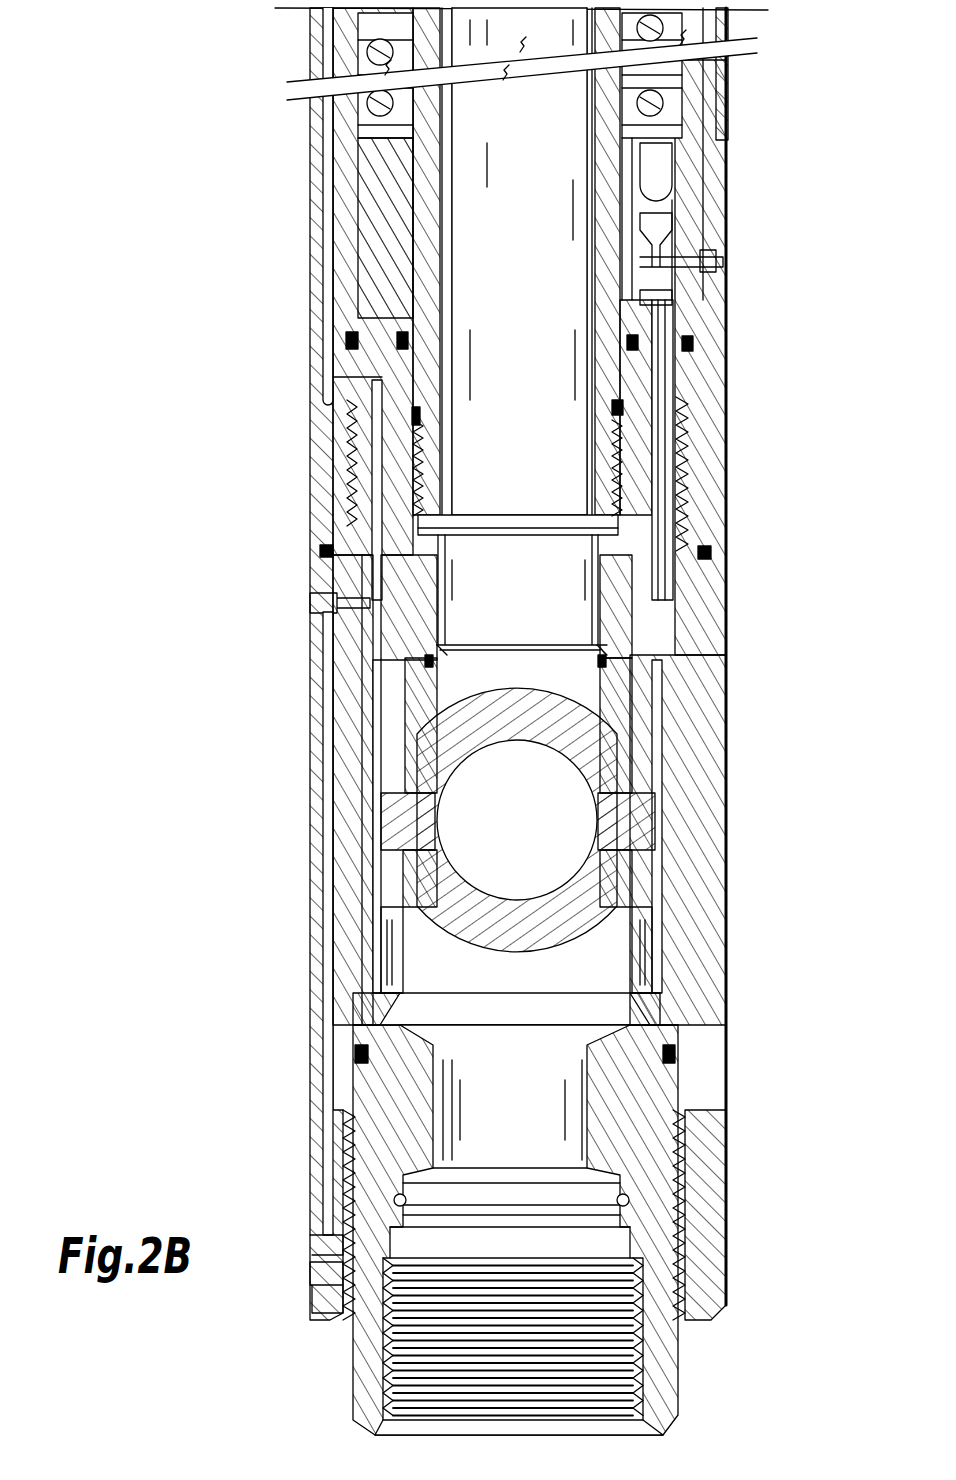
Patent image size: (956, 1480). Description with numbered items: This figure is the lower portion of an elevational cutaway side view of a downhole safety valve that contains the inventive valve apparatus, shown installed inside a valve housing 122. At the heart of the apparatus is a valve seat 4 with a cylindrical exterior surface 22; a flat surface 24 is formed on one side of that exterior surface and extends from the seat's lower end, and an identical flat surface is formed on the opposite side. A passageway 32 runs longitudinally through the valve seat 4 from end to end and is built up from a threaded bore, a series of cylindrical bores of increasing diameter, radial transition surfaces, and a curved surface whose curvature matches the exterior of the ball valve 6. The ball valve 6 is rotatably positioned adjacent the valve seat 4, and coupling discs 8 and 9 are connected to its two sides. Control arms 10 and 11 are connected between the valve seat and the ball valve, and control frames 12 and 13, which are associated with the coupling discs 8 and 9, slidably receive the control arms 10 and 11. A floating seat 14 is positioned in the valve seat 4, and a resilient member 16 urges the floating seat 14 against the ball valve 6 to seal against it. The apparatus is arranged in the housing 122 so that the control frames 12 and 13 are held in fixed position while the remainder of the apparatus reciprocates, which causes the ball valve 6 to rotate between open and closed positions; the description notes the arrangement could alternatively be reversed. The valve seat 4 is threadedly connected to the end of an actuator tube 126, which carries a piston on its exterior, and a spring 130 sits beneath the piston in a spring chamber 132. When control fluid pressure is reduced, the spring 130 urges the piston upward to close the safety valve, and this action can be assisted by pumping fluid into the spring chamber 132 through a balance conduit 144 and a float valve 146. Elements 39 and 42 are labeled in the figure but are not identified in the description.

The valve seat 4 is at (612, 590).
The ball valve 6 is at (583, 738).
The coupling disc 8 is at (400, 733).
The coupling disc 9 is at (655, 908).
The control arm 10 is at (400, 823).
The control arm 11 is at (665, 815).
The control frame 12 is at (368, 988).
The control frame 13 is at (655, 985).
The floating seat 14 is at (625, 670).
The resilient member 16 is at (445, 660).
The cylindrical exterior surface 22 is at (395, 490).
The flat surface 24 is at (322, 608).
The passageway 32 is at (530, 604).
The threads 39 is at (625, 455).
The flow passage 42 is at (535, 834).
The valve housing 122 is at (724, 1143).
The actuator tube 126 is at (420, 212).
The spring 130 is at (300, 24).
The spring chamber 132 is at (722, 80).
The balance conduit 144 is at (707, 163).
The float valve 146 is at (723, 238).